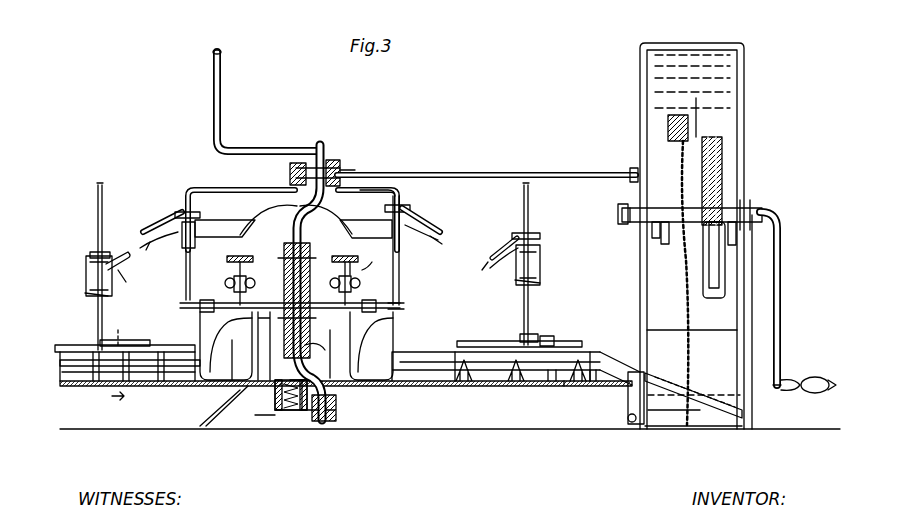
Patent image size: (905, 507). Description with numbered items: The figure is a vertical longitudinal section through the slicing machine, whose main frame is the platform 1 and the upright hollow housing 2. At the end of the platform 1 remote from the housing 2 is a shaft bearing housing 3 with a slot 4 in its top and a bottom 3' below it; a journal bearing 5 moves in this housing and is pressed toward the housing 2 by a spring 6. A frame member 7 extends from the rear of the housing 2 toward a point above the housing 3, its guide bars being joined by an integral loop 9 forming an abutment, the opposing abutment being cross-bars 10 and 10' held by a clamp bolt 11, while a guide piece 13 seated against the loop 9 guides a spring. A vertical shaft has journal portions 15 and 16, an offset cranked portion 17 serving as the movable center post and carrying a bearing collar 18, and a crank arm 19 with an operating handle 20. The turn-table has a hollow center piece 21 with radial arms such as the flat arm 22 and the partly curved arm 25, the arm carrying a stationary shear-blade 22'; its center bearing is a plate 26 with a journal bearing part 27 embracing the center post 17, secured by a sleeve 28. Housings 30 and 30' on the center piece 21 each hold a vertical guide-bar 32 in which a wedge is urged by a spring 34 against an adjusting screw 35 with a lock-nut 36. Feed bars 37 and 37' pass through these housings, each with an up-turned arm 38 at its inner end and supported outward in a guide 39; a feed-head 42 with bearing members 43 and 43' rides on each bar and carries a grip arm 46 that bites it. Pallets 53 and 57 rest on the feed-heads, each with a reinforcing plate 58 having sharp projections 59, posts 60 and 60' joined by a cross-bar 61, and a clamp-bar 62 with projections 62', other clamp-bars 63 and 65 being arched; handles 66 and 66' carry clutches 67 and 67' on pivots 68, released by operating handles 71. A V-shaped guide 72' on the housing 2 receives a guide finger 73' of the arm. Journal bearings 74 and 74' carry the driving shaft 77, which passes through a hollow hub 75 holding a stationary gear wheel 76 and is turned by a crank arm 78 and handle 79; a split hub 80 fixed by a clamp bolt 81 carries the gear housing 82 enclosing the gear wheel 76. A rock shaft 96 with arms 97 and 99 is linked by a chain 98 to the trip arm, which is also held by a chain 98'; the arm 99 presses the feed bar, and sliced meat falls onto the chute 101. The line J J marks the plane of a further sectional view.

The platform 1 is at (436, 420).
The upright hollow housing 2 is at (745, 80).
The shaft bearing housing 3 is at (271, 423).
The bottom 3' is at (312, 426).
The slot 4 is at (272, 405).
The journal bearing 5 is at (345, 400).
The spring 6 is at (294, 412).
The frame member 7 is at (467, 172).
The integral loop 9 is at (290, 172).
The cross-bar 10 is at (359, 153).
The cross-bar 10' is at (375, 197).
The clamp bolt 11 is at (336, 160).
The guide piece 13 is at (298, 163).
The journal portion 15 is at (315, 422).
The journal portion 16 is at (322, 158).
The offset cranked portion 17 is at (285, 250).
The bearing collar 18 is at (317, 351).
The crank arm 19 is at (248, 146).
The operating handle 20 is at (213, 80).
The hollow center piece 21 is at (390, 322).
The arm 22 is at (496, 344).
The stationary shear-blade 22' is at (607, 346).
The arm 25 is at (68, 345).
The plate 26 is at (362, 286).
The journal bearing part 27 is at (350, 256).
The sleeve 28 is at (236, 256).
The housing 30 is at (324, 399).
The housing 30' is at (197, 381).
The vertical guide-bar 32 is at (214, 306).
The spring 34 is at (205, 338).
The adjusting screw 35 is at (372, 264).
The lock-nut 36 is at (362, 274).
The feed bar 37 is at (348, 394).
The feed bar 37' is at (122, 397).
The base 38 is at (258, 416).
The guide 39 is at (553, 385).
The feed-head 42 is at (62, 365).
The bearing member 43 is at (309, 420).
The bearing member 43' is at (304, 420).
The grip arm 46 is at (126, 383).
The pallet 53 is at (478, 341).
The pallet 57 is at (140, 340).
The reinforcing plate 58 is at (554, 341).
The sharp projections 59 is at (536, 336).
The post 60 is at (253, 245).
The post 60' is at (340, 275).
The cross-bar 61 is at (100, 186).
The clamp-bar 62 is at (554, 265).
The sharp projections 62' is at (312, 256).
The clamp-bar 63 is at (252, 218).
The clamp-bar 65 is at (86, 288).
The projecting handle 66 is at (296, 268).
The projecting handle 66' is at (316, 270).
The clutch 67 is at (266, 219).
The clutch 67' is at (369, 196).
The pivot 68 is at (183, 222).
The operating handle 71 is at (148, 232).
The V-shaped guide 72' is at (588, 411).
The guide finger 73' is at (566, 440).
The journal bearing 74 is at (711, 203).
The journal bearing 74' is at (612, 203).
The hollow hub 75 is at (736, 248).
The gear wheel 76 is at (726, 276).
The driving shaft 77 is at (764, 212).
The crank arm 78 is at (782, 328).
The operating handle 79 is at (802, 380).
The hub 80 is at (660, 245).
The clamp bolt 81 is at (652, 240).
The gear housing 82 is at (720, 137).
The rock shaft 96 is at (640, 425).
The arm 97 is at (672, 428).
The chain 98 is at (697, 426).
The chain 98' is at (644, 270).
The arm 99 is at (632, 422).
The chute 101 is at (712, 388).
The section line J- J is at (114, 364).